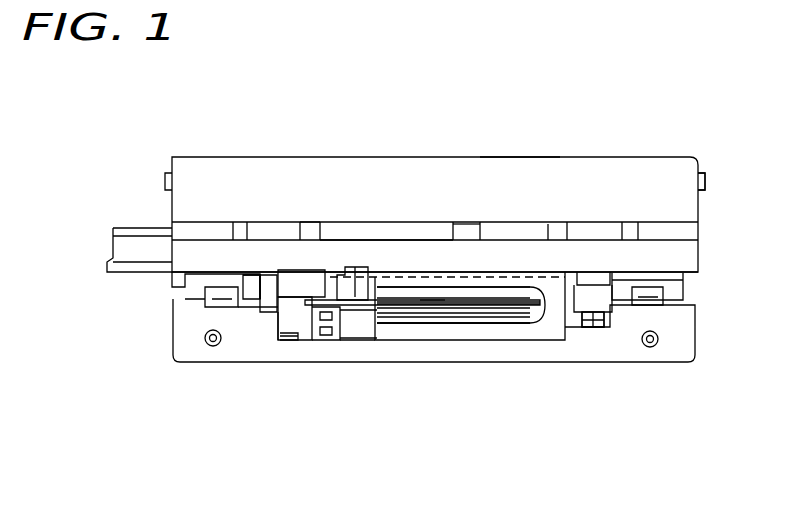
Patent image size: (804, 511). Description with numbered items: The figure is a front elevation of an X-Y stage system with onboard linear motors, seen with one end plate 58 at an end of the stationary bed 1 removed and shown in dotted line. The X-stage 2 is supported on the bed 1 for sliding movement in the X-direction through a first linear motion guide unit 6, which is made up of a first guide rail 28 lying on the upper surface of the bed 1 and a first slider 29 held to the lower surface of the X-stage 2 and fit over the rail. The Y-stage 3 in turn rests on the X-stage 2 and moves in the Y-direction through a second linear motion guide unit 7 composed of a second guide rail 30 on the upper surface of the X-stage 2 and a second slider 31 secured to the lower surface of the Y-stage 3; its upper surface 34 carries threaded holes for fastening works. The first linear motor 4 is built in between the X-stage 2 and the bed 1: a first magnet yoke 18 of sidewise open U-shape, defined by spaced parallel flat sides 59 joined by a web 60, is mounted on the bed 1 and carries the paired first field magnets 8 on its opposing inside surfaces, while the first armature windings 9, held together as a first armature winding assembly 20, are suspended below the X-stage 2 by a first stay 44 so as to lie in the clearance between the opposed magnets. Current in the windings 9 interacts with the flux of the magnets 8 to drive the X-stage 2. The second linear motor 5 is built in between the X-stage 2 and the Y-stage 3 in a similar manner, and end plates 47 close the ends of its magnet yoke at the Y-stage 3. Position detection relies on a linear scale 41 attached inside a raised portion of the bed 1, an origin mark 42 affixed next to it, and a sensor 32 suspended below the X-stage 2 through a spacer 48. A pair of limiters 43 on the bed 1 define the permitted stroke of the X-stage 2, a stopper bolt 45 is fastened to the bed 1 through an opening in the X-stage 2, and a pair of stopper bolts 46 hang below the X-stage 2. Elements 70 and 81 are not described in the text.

The stationary bed 1 is at (573, 348).
The X-stage 2 is at (650, 255).
The Y-stage 3 is at (623, 167).
The first linear motor 4 is at (413, 322).
The second linear motor 5 is at (467, 230).
The first linear motion guide unit 6 is at (243, 282).
The second linear motion guide unit 7 is at (314, 218).
The first field magnets 8 is at (512, 290).
The first armature windings 9 is at (465, 313).
The first magnet yoke 18 is at (502, 337).
The first armature winding assembly 20 is at (432, 298).
The first guide rail 28 is at (210, 307).
The first slider 29 is at (187, 287).
The second guide rail 30 is at (404, 232).
The second slider 31 is at (265, 230).
The sensor 32 is at (300, 317).
The upper surface 34 is at (497, 157).
The linear scale 41 is at (262, 305).
The origin mark 42 is at (288, 342).
The limiters 43 is at (330, 325).
The first stay 44 is at (358, 287).
The stopper bolt 45 is at (612, 312).
The stopper bolts 46 is at (600, 270).
The end plates 47 is at (170, 198).
The spacer 48 is at (295, 287).
The end plates 58 is at (262, 272).
The flat sides 59 is at (483, 280).
The web 60 is at (557, 305).
The slide 70 is at (513, 303).
The fastening flange 81 is at (704, 178).